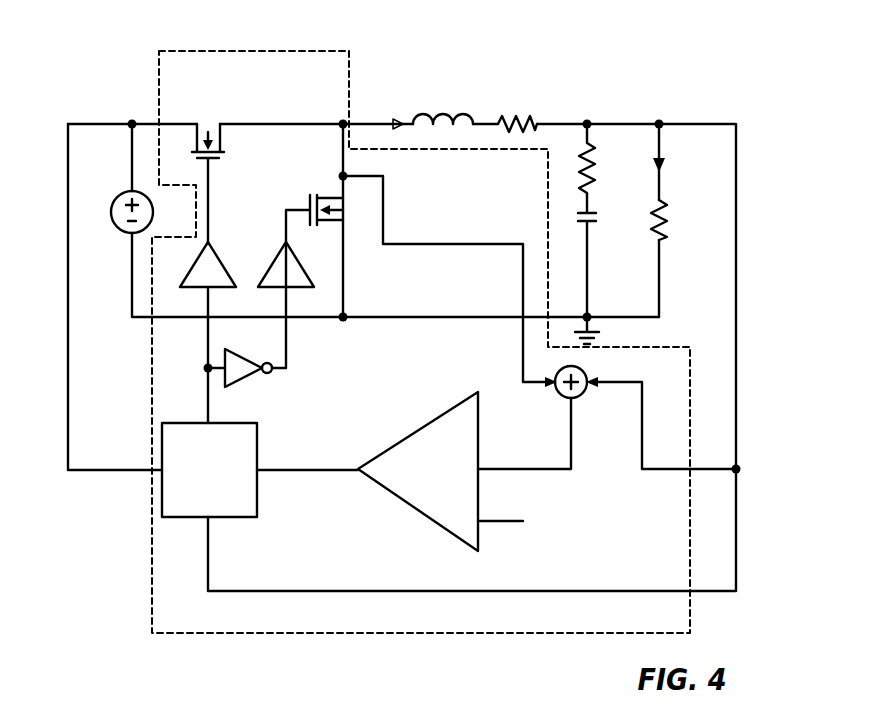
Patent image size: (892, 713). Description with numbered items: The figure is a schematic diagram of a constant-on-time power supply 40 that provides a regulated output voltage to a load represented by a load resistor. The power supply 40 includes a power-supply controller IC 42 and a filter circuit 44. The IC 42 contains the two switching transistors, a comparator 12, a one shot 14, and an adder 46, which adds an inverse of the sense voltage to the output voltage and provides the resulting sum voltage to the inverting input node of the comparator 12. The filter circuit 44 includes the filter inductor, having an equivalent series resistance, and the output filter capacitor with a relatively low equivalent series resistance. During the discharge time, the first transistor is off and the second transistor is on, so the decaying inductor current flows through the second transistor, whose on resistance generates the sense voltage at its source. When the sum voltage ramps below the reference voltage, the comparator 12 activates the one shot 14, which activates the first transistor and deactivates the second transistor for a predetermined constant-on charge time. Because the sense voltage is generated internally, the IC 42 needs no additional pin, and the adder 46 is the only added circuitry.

The constant-on-time power supply 40 is at (453, 318).
The power-supply controller IC 42 is at (217, 52).
The filter circuit 44 is at (572, 93).
The comparator 12 is at (407, 432).
The one shot 14 is at (250, 423).
The adder 46 is at (585, 394).